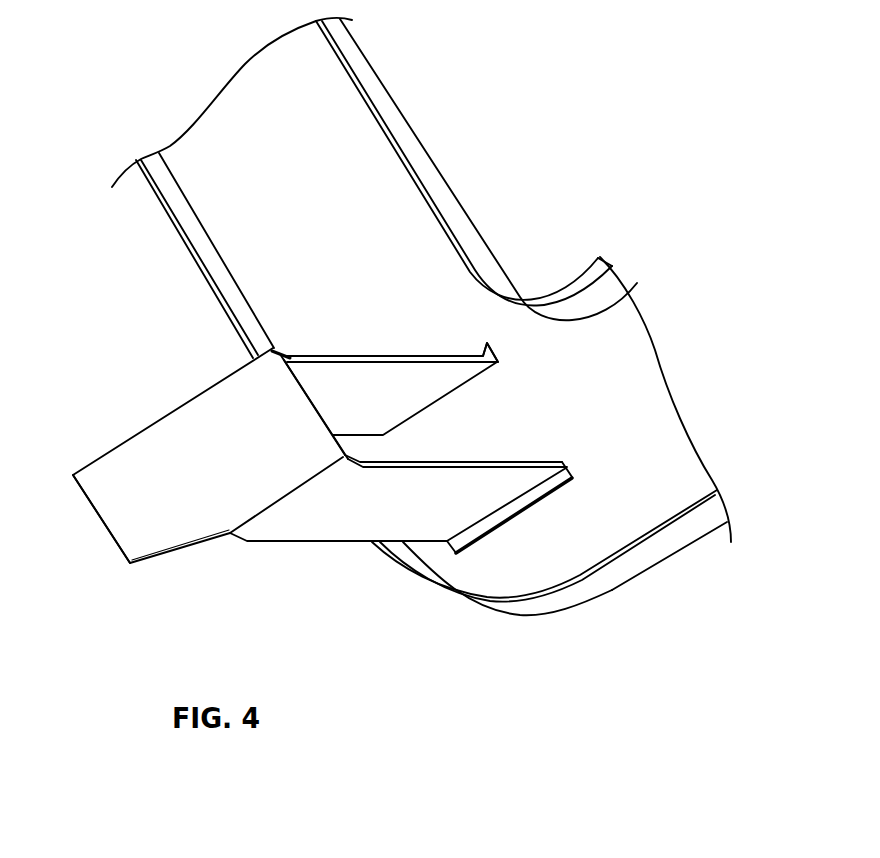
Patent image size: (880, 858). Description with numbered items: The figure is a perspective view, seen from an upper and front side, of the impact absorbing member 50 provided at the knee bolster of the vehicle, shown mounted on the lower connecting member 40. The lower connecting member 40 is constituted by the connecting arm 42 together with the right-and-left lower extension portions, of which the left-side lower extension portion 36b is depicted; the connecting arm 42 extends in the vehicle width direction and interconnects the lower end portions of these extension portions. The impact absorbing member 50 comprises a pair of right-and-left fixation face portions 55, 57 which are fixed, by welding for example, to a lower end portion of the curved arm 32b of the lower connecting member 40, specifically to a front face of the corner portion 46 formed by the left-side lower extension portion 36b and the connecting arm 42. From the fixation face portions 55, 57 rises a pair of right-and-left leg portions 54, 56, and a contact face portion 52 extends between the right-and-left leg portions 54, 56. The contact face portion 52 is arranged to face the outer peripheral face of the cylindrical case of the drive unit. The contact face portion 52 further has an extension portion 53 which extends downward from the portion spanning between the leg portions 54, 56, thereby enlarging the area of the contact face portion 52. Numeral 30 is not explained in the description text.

The lower clamp member 30 is at (523, 639).
The curved arm 32b is at (716, 537).
The left-side lower extension portion 36b is at (643, 366).
The lower connecting member 40 is at (448, 159).
The connecting arm 42 is at (243, 216).
The corner portion 46 is at (537, 318).
The impact absorbing member 50 is at (99, 392).
The contact face portion 52 is at (228, 412).
The extension portion 53 is at (98, 474).
The leg portion 54 is at (352, 354).
The fixation face portion 55 is at (468, 348).
The leg portion 56 is at (353, 520).
The fixation face portion 57 is at (545, 487).